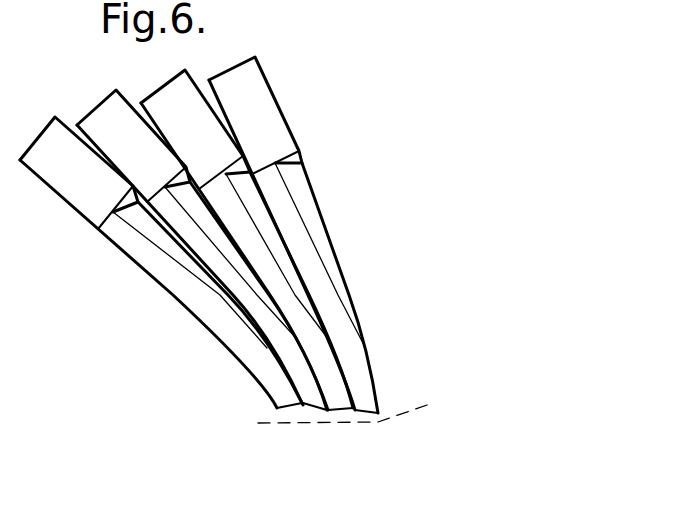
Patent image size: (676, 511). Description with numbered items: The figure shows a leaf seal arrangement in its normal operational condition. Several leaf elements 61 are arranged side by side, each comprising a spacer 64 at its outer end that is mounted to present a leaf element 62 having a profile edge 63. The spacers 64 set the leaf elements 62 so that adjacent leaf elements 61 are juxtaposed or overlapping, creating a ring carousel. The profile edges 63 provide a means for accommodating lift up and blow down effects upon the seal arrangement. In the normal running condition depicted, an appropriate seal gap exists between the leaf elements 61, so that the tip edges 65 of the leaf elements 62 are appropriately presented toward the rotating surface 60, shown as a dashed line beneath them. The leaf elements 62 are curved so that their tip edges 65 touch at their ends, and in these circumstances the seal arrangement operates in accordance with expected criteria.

The rotating surface 60 is at (360, 409).
The leaf elements 61 is at (212, 277).
The leaf elements 62 is at (318, 268).
The profile edges 63 is at (238, 264).
The spacers 64 is at (272, 110).
The tip edges 65 is at (315, 397).